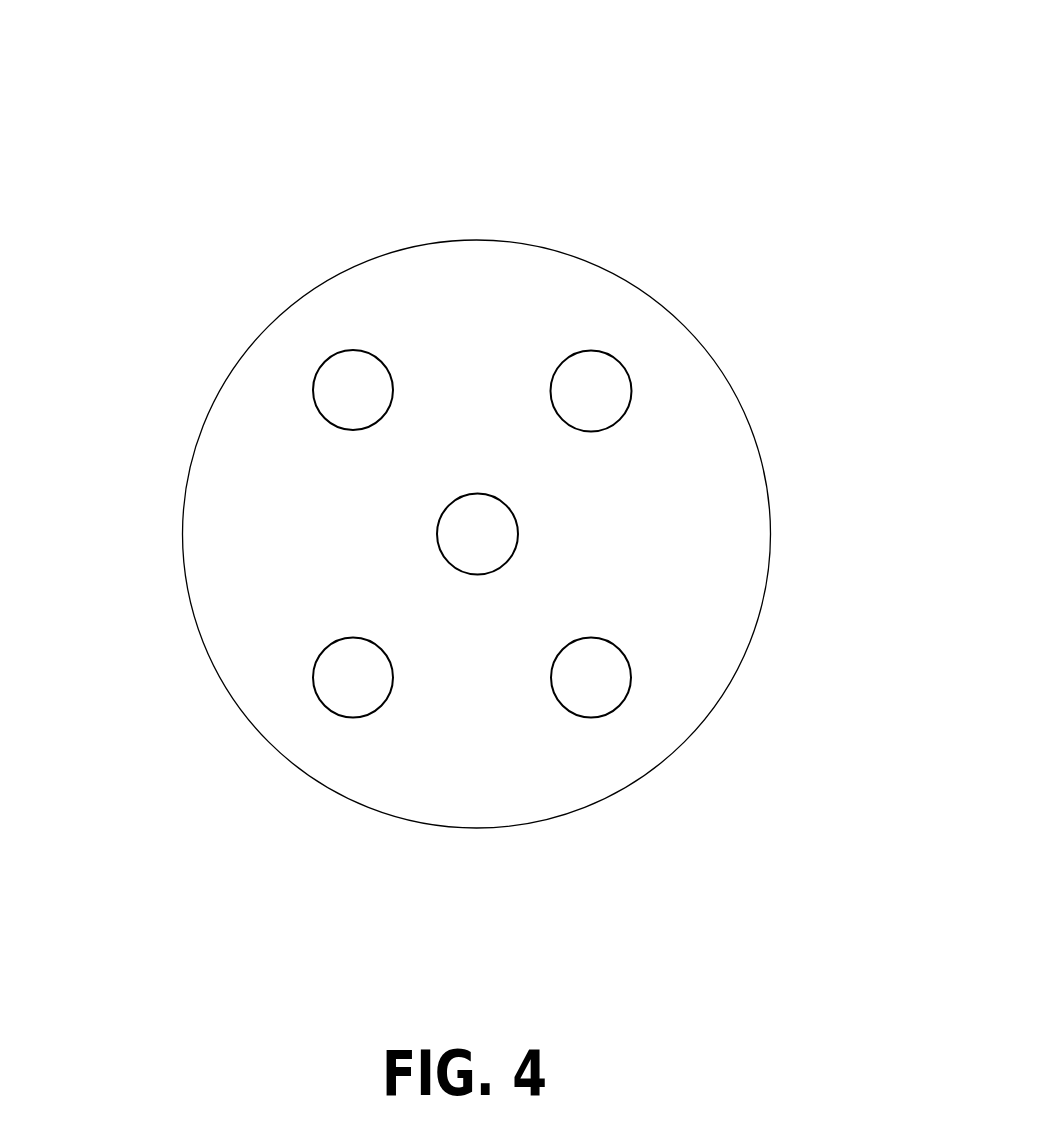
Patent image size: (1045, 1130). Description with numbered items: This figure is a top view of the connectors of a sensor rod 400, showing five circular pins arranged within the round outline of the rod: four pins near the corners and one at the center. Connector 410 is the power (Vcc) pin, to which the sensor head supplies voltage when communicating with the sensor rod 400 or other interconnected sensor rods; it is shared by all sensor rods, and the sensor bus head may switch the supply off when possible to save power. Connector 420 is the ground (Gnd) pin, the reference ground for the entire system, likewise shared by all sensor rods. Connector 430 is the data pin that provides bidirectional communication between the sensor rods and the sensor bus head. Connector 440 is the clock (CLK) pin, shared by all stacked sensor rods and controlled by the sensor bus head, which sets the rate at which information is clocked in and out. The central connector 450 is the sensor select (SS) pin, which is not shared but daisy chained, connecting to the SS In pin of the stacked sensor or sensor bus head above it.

The sensor rod 400 is at (114, 93).
The power (Vcc) connector 410 is at (612, 353).
The ground (Gnd) connector 420 is at (592, 717).
The data connector 430 is at (356, 717).
The clock (CLK) connector 440 is at (367, 354).
The sensor select (SS) connector 450 is at (518, 533).